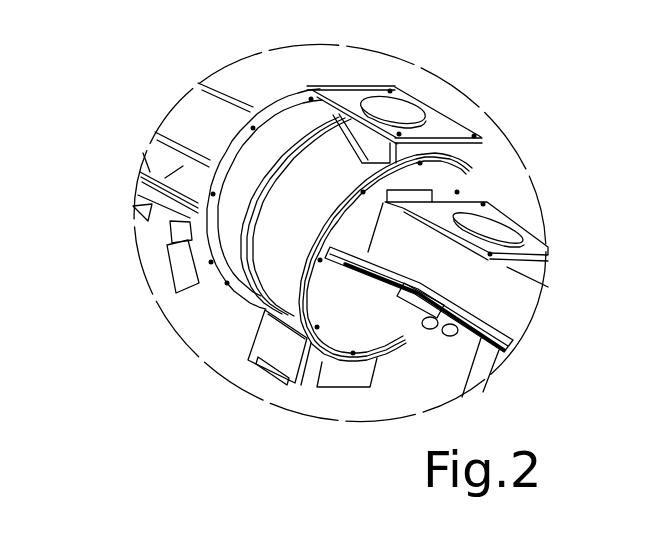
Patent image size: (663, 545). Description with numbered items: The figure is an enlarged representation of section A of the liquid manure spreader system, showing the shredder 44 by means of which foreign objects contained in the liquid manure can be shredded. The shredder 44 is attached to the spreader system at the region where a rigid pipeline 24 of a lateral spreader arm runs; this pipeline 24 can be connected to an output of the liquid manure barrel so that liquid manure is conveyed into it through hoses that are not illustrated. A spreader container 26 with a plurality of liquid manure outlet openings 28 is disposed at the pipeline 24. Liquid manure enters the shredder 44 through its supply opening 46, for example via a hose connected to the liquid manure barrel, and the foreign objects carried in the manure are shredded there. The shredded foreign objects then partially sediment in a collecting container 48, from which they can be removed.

The rigid pipeline 24 is at (222, 113).
The spreader container 26 is at (141, 182).
The liquid manure outlet opening 28 is at (183, 288).
The shredder 44 is at (493, 84).
The supply opening 46 is at (395, 118).
The collecting container 48 is at (337, 367).
The section A is at (367, 46).